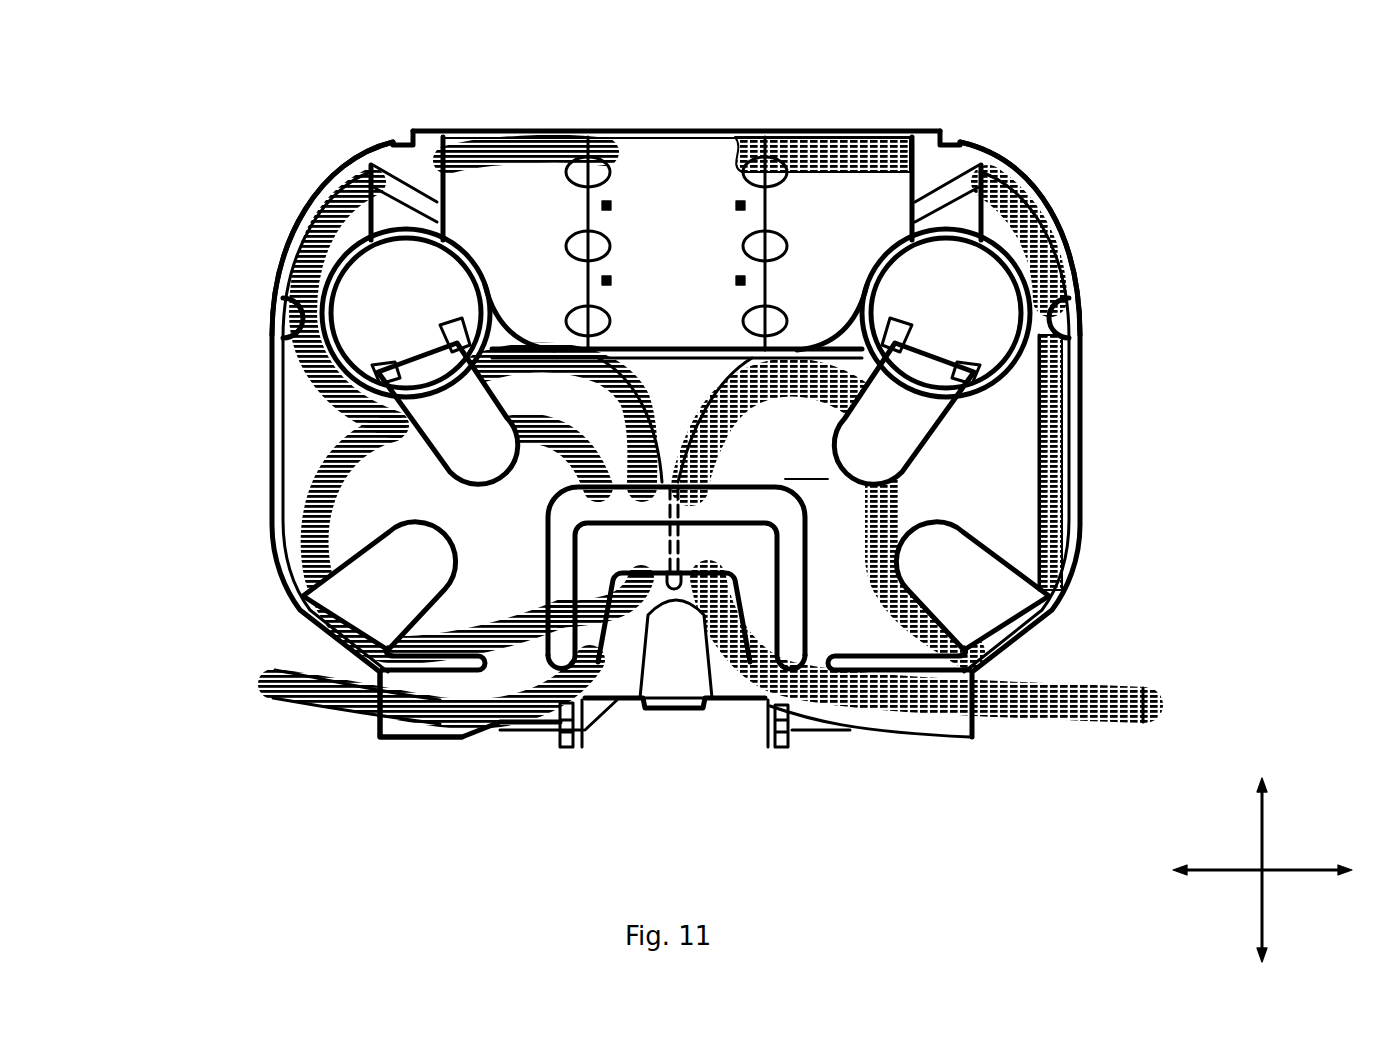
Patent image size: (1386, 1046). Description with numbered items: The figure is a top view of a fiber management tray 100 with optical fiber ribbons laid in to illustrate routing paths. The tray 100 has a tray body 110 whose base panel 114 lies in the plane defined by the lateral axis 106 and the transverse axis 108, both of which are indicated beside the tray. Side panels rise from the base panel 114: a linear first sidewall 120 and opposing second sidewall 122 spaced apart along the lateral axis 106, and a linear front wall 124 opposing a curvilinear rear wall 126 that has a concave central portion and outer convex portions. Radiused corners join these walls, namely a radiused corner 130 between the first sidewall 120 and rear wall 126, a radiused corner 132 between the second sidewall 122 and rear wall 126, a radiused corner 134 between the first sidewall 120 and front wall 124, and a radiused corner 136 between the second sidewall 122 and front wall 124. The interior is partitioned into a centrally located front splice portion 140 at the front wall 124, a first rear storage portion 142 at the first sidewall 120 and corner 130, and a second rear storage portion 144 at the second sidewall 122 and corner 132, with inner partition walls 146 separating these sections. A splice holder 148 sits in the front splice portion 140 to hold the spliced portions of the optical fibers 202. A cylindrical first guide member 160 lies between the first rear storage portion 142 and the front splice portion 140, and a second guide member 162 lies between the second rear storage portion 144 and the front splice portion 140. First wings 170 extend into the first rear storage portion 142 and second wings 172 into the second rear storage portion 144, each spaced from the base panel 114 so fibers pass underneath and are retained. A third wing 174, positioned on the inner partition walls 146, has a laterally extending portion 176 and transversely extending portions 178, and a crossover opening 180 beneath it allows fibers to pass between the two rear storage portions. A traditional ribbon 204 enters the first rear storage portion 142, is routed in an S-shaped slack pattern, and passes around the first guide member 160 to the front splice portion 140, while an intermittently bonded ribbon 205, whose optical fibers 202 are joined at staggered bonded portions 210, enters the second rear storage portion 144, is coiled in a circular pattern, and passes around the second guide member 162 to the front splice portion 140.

The fiber management tray 100 is at (1150, 128).
The lateral axis 106 is at (1297, 872).
The transverse axis 108 is at (1262, 830).
The tray body 110 is at (807, 466).
The base panel 114 is at (1002, 418).
The first sidewall 120 is at (1080, 446).
The second sidewall 122 is at (272, 421).
The front wall 124 is at (706, 128).
The rear wall 126 is at (668, 706).
The radiused corner 130 is at (990, 610).
The radiused corner 132 is at (305, 638).
The radiused corner 134 is at (1032, 205).
The radiused corner 136 is at (330, 210).
The front splice portion 140 is at (810, 178).
The first rear storage portion 142 is at (1020, 450).
The second rear storage portion 144 is at (305, 455).
The inner partition walls 146 is at (600, 442).
The splice holder 148 is at (660, 346).
The first guide member 160 is at (997, 335).
The second guide member 162 is at (349, 332).
The first wing 170 is at (897, 425).
The second wing 172 is at (452, 428).
The third wing 174 is at (786, 545).
The laterally extending portion 176 is at (587, 515).
The transversely extending portion 178 is at (572, 606).
The crossover opening 180 is at (682, 528).
The optical fibers 202 is at (332, 702).
The traditional ribbon 204 is at (1150, 712).
The intermittently bonded ribbon 205 is at (270, 688).
The bonded portions 210 is at (312, 700).